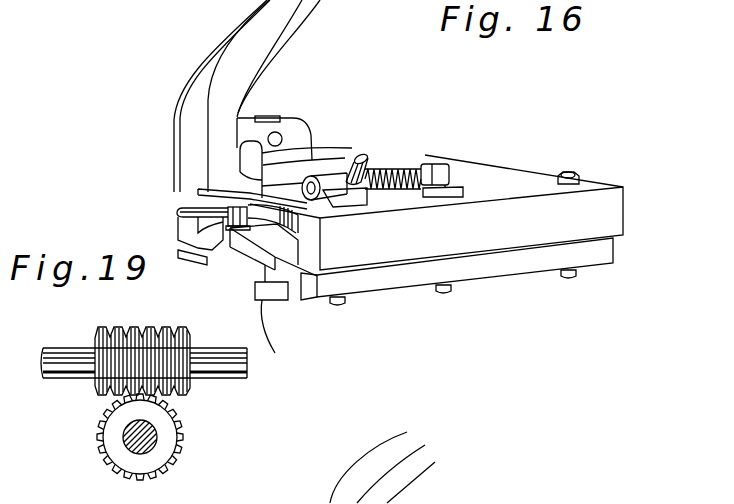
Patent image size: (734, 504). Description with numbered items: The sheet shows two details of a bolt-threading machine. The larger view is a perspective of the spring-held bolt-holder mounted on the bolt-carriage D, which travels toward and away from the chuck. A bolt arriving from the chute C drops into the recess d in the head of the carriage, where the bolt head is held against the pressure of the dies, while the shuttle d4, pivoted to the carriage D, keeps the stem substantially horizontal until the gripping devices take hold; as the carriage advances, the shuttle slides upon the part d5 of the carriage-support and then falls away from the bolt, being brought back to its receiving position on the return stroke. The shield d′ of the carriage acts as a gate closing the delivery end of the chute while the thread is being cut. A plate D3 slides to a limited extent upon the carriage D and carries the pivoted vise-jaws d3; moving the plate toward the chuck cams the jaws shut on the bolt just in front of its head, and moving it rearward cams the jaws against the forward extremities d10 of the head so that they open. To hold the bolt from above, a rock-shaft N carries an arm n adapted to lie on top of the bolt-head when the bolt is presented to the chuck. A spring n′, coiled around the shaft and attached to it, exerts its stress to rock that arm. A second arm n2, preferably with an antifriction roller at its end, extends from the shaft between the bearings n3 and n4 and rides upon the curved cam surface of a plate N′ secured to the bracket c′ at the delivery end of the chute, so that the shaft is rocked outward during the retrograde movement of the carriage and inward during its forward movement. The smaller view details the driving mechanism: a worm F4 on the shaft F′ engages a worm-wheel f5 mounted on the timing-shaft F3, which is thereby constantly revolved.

In FIG. 16, the carriage frame C is at (254, 96).
In FIG. 16, the bracket c′ is at (278, 118).
In FIG. 16, the arm n is at (240, 166).
In FIG. 16, the rock-shaft N is at (327, 168).
In FIG. 16, the plate N′ is at (298, 186).
In FIG. 16, the spring n′ is at (401, 163).
In FIG. 16, the arm n2 is at (368, 158).
In FIG. 16, the bearing n3 is at (362, 206).
In FIG. 16, the bearing n4 is at (450, 182).
In FIG. 16, the recess d is at (198, 191).
In FIG. 16, the shield d′ is at (489, 178).
In FIG. 16, the vise-jaws d3 is at (300, 229).
In FIG. 16, the shuttle d4 is at (178, 210).
In FIG. 16, the part of the carriage-support d5 is at (187, 261).
In FIG. 16, the forward extremities of the head d10 is at (237, 218).
In FIG. 16, the bolt-carriage D is at (516, 253).
In FIG. 16, the plate D3 is at (288, 240).
In FIG. 19, the shaft F′ is at (207, 353).
In FIG. 19, the timing-shaft F3 is at (158, 431).
In FIG. 19, the worm F4 is at (147, 321).
In FIG. 19, the worm-wheel f5 is at (112, 428).